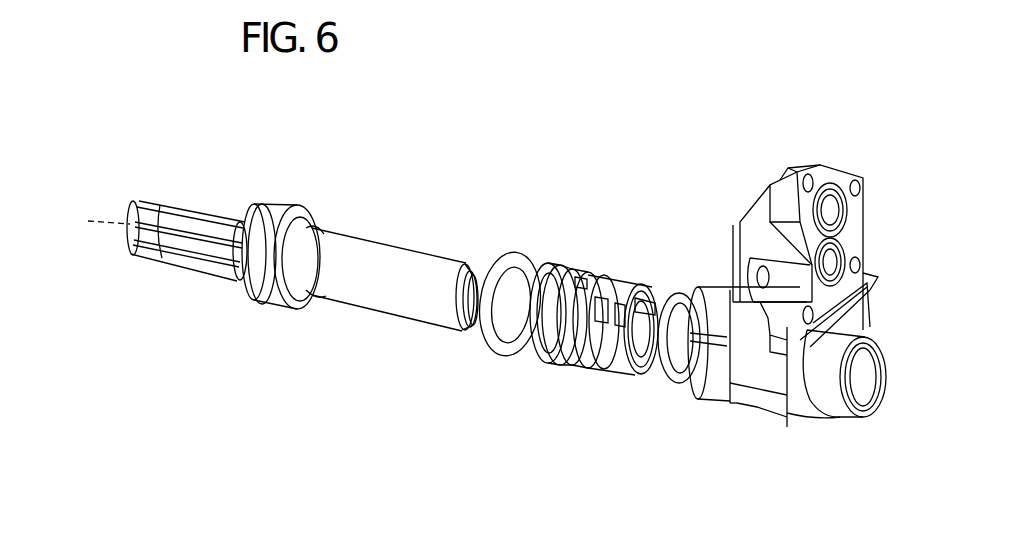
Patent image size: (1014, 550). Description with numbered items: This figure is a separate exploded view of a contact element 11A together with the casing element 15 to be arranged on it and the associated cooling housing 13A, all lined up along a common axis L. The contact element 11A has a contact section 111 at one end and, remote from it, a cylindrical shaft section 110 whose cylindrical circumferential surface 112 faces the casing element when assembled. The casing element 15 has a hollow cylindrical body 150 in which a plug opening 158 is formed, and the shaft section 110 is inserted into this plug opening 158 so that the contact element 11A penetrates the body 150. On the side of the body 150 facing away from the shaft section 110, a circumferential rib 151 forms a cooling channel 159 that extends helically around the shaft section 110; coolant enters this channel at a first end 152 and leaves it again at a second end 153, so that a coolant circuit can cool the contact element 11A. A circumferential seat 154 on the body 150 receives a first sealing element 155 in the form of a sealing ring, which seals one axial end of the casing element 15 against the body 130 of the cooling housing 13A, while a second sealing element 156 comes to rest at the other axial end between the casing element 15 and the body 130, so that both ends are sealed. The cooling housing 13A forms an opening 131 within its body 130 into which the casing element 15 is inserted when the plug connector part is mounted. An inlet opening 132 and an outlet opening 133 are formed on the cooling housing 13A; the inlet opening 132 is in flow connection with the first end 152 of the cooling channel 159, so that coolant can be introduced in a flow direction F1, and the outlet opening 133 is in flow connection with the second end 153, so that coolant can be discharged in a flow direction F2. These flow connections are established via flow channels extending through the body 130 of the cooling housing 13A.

The longitudinal axis L is at (108, 244).
The contact section 111 is at (195, 262).
The contact element 11A is at (287, 320).
The shaft section 110 is at (397, 307).
The cylindrical circumferential surface 112 is at (366, 254).
The first sealing element 155 is at (498, 356).
The casing element 15 is at (612, 319).
The circumferential seat 154 is at (554, 265).
The cooling channel 159 is at (576, 272).
The second end 153 is at (586, 277).
The circumferential rib 151 is at (601, 282).
The first end 152 is at (622, 290).
The plug opening 158 is at (649, 308).
The body 150 is at (625, 376).
The second sealing element 156 is at (692, 306).
The cooling housing 13A is at (789, 335).
The inlet opening 132 is at (878, 278).
The outlet opening 133 is at (827, 208).
The body 130 is at (752, 404).
The opening 131 is at (872, 382).
The flow direction F1 is at (872, 262).
The flow direction F2 is at (852, 210).